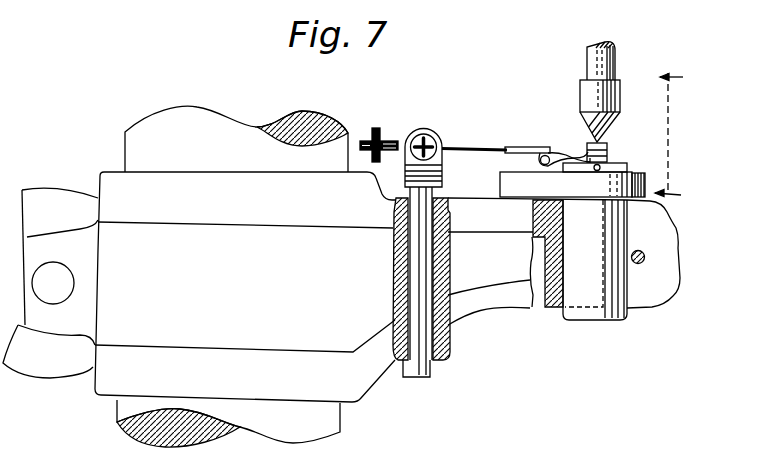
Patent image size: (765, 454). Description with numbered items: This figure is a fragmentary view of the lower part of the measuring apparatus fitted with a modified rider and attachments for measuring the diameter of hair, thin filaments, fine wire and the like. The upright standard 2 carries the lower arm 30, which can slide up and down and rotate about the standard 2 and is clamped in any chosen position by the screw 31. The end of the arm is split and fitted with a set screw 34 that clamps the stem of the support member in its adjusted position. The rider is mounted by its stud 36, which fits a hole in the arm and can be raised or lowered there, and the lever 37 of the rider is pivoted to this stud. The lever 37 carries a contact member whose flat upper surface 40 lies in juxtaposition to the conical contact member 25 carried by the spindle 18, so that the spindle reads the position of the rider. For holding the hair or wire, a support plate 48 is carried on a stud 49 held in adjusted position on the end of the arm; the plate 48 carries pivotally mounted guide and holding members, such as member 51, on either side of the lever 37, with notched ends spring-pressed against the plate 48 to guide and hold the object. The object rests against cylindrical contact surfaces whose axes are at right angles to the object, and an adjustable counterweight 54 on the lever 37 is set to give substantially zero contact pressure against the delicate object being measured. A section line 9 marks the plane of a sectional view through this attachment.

The standard 2 is at (132, 143).
The section line 9- 9 is at (676, 132).
The spindle 18 is at (588, 63).
The conical contact member 25 is at (603, 133).
The lower arm 30 is at (498, 305).
The screw 31 is at (48, 190).
The set screw 34 is at (645, 258).
The stud 36 is at (420, 377).
The lever 37 is at (470, 147).
The flat surface 40 is at (607, 143).
The support plate 48 is at (500, 182).
The stud 49 is at (602, 297).
The guide and holding member 51 is at (550, 148).
The adjustable counterweight 54 is at (392, 137).